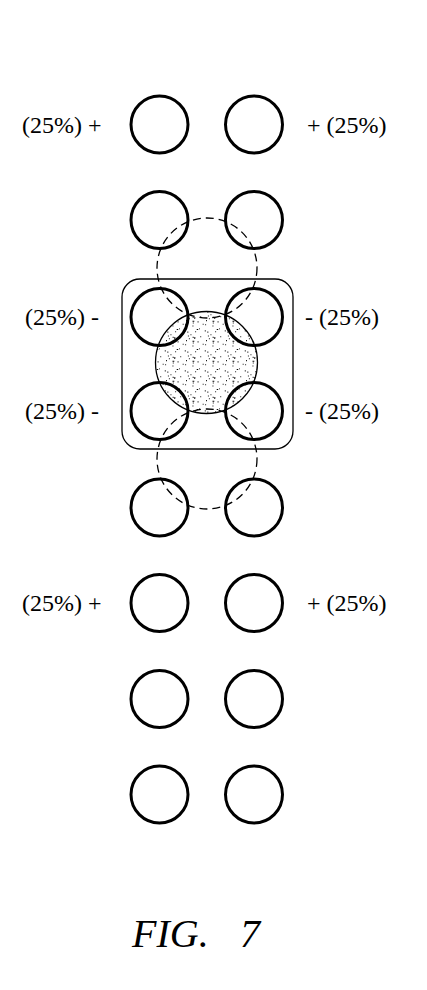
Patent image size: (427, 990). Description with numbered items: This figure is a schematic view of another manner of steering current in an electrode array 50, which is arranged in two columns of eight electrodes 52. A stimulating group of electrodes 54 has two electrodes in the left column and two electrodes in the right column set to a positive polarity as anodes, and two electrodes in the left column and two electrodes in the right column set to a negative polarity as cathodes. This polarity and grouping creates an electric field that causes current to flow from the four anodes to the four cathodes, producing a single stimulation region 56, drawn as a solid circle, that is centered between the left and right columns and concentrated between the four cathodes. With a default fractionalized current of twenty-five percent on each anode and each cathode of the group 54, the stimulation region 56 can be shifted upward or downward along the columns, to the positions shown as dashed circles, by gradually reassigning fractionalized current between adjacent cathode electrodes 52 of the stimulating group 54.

The electrode array 50 is at (218, 411).
The electrode 52 is at (132, 108).
The stimulating group of electrodes 54 is at (127, 428).
The stimulation region 56 is at (258, 363).